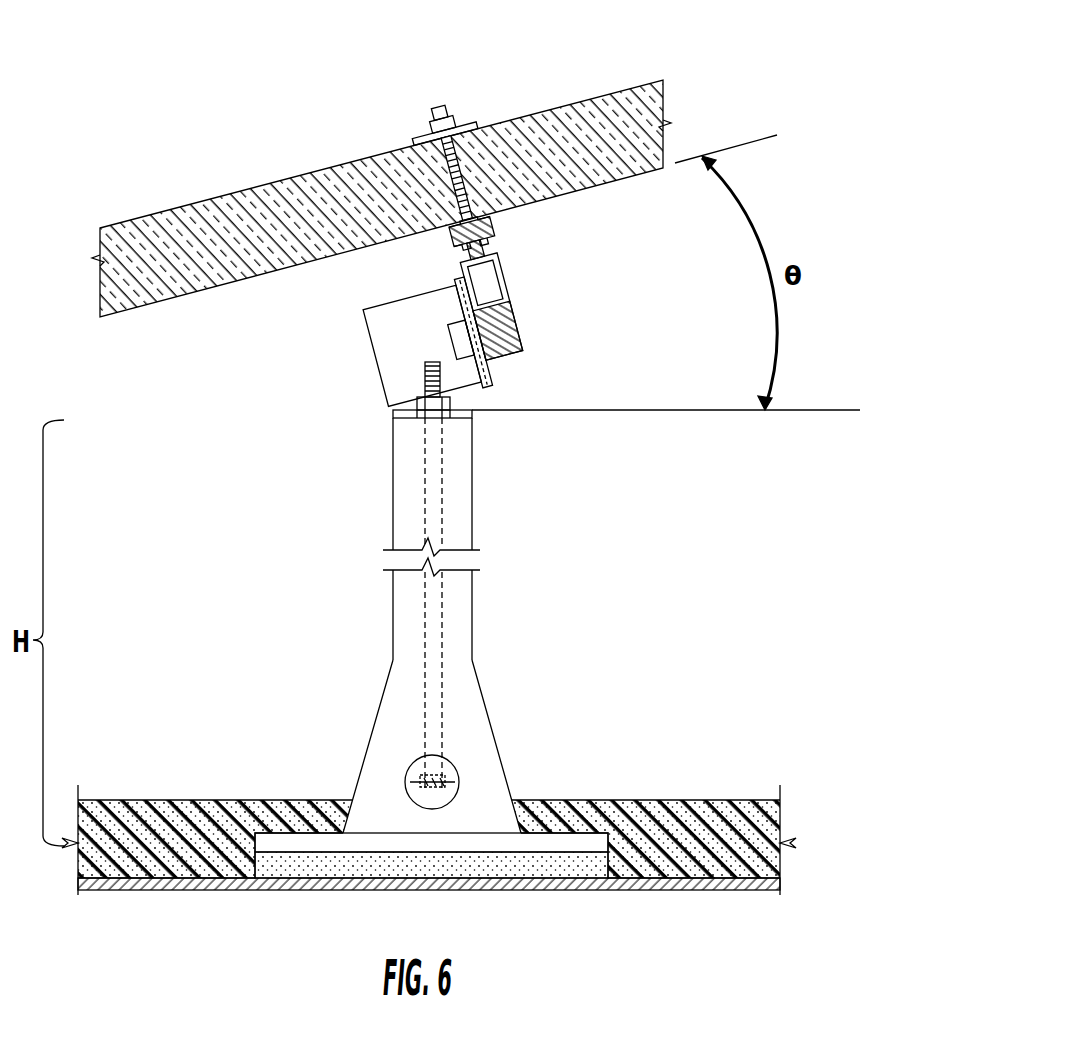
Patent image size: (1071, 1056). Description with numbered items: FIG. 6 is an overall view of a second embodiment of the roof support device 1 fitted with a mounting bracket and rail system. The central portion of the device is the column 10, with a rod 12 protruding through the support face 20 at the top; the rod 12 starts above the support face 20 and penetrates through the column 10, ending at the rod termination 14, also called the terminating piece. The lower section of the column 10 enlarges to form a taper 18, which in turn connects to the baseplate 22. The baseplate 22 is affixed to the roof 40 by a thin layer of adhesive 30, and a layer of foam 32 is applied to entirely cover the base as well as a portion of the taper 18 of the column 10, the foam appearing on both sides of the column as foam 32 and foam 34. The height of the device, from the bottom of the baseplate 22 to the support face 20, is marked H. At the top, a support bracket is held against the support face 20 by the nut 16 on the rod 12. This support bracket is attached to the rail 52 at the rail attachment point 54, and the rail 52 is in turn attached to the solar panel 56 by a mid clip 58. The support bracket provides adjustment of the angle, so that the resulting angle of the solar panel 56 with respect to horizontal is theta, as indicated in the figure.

The roof support device 1 is at (526, 521).
The column 10 is at (472, 627).
The rod 12 is at (430, 637).
The rod termination 14 is at (455, 768).
The nut 16 is at (395, 405).
The taper 18 is at (372, 722).
The support face 20 is at (472, 412).
The baseplate 22 is at (590, 838).
The adhesive 30 is at (540, 865).
The foam 32 is at (700, 800).
The ground left portion 34 is at (190, 800).
The roof 40 is at (158, 882).
The rail 52 is at (508, 283).
The rail attachment point 54 is at (445, 340).
The solar panel 56 is at (609, 97).
The mid clip 58 is at (465, 163).